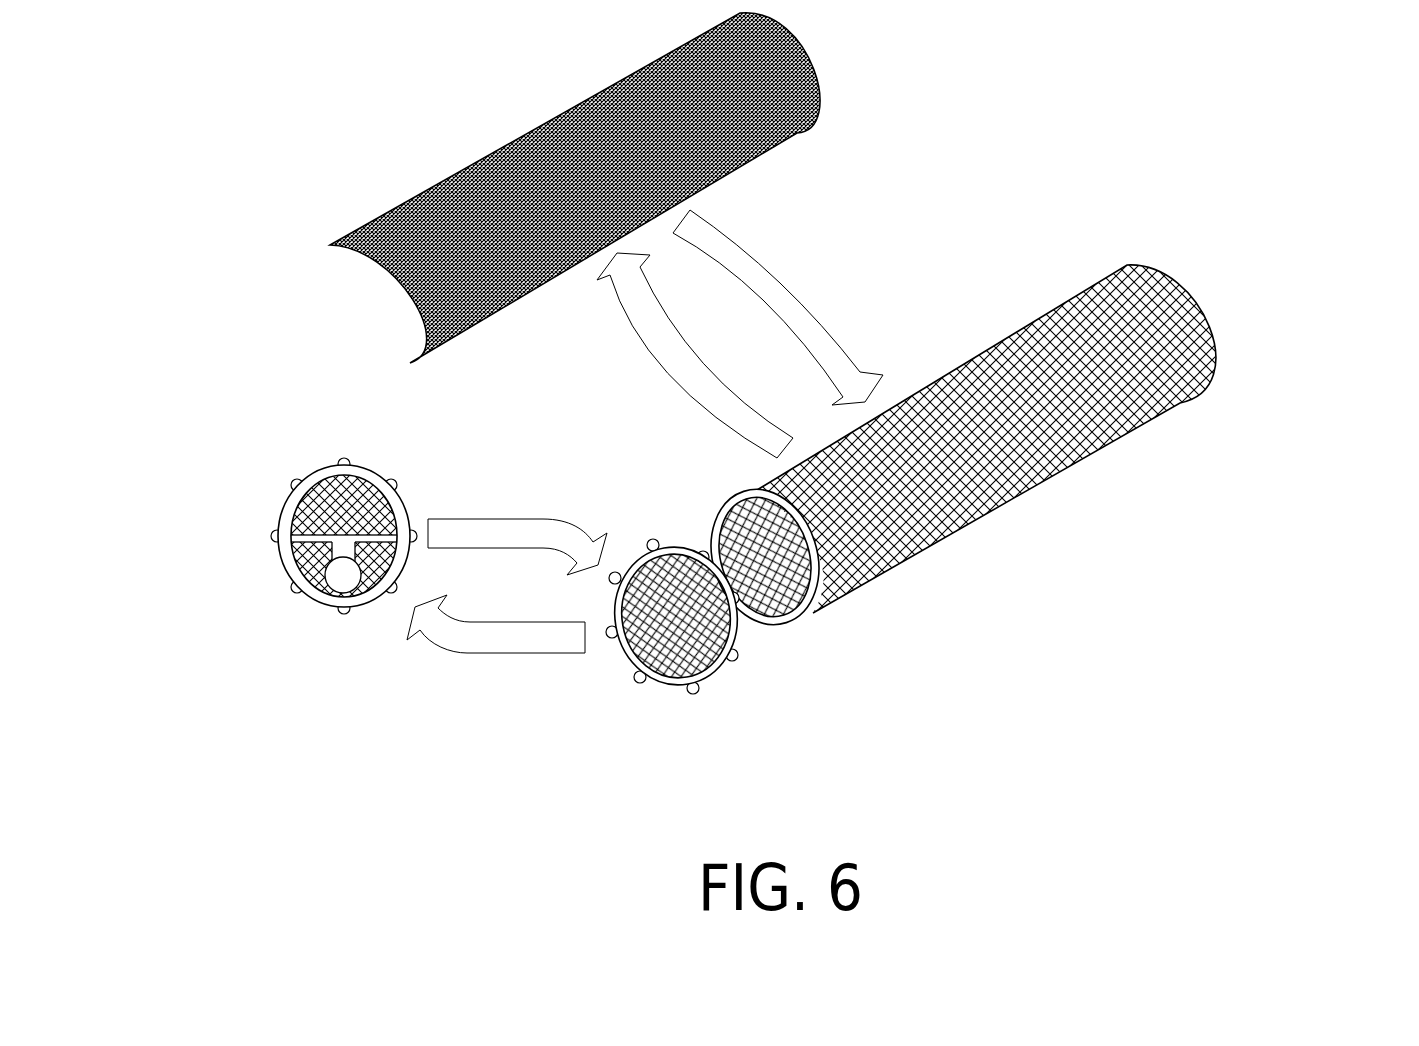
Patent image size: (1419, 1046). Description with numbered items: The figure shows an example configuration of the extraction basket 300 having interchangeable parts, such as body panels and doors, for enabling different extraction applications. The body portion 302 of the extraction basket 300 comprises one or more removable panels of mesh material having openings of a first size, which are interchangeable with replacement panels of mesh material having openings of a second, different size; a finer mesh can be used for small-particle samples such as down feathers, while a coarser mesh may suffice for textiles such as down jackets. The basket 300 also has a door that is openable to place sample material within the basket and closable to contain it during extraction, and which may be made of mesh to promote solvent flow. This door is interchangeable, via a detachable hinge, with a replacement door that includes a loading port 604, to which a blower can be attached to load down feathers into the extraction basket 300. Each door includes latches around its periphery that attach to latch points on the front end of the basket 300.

The extraction basket 300 is at (1043, 396).
The body portion 302 is at (1035, 487).
The loading port 604 is at (275, 589).